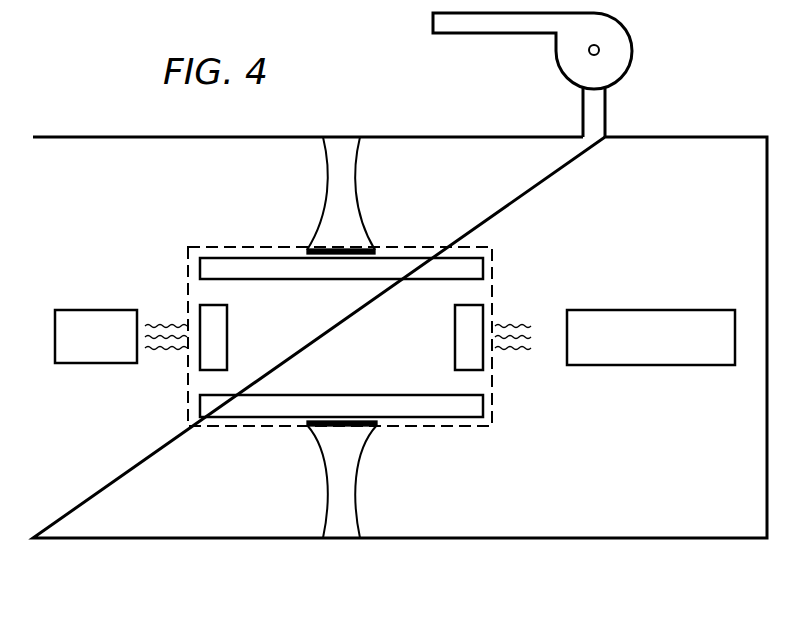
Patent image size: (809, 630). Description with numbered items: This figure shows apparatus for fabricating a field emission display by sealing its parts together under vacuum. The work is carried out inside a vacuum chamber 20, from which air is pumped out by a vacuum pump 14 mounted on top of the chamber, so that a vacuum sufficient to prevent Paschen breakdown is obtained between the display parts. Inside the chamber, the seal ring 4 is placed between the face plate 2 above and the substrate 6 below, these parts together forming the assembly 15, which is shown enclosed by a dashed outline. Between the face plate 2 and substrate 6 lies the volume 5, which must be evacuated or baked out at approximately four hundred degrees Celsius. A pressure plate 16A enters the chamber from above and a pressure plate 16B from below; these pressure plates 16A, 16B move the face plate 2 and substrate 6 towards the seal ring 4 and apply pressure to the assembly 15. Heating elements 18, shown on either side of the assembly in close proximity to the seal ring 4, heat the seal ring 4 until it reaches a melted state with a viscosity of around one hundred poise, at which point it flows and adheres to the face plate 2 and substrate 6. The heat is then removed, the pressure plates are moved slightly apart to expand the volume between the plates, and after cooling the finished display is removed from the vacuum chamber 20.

The face plate 2 is at (328, 280).
The seal ring 4 is at (228, 325).
The volume 5 is at (347, 373).
The substrate 6 is at (397, 394).
The vacuum pump 14 is at (632, 44).
The assembly 15 is at (450, 246).
The pressure plate 16A is at (355, 178).
The pressure plate 16B is at (355, 492).
The heating elements 18 is at (90, 309).
The vacuum chamber 20 is at (593, 539).